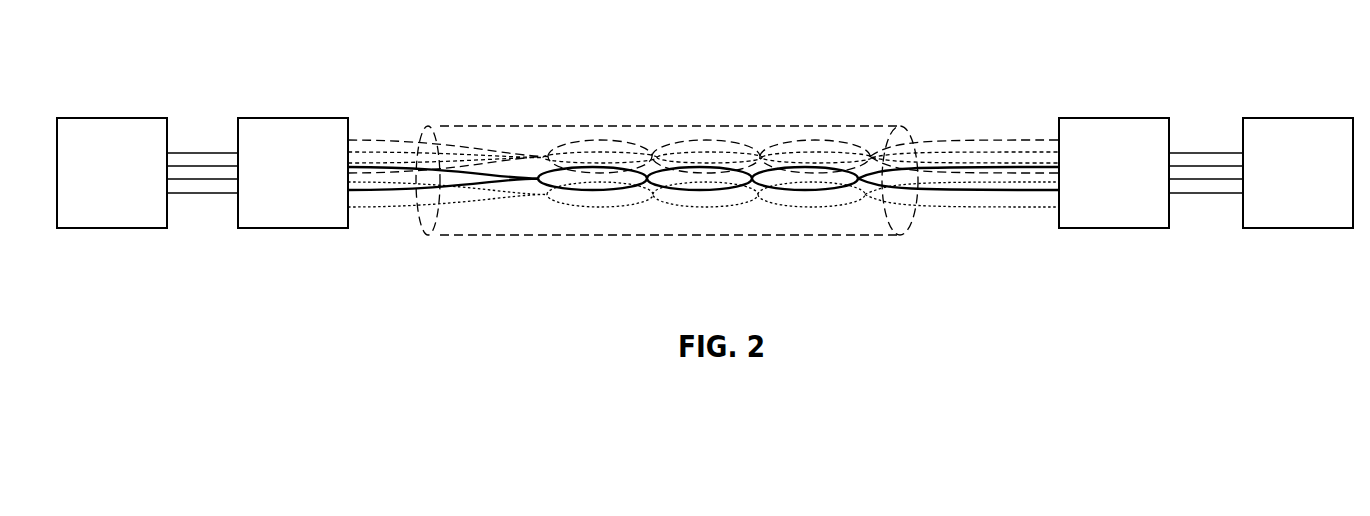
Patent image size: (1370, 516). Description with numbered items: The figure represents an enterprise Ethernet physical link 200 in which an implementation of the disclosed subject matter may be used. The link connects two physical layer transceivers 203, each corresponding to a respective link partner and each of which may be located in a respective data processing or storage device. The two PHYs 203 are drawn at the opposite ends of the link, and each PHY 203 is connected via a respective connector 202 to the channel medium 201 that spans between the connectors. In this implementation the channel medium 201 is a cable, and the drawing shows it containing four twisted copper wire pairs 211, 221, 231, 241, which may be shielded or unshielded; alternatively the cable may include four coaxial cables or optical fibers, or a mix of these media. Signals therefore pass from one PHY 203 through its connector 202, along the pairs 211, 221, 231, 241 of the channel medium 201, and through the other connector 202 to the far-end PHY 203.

The enterprise Ethernet physical link 200 is at (130, 36).
The channel medium 201 is at (766, 127).
The connector 202 is at (312, 117).
The physical layer transceiver 203 is at (131, 117).
The twisted copper wire pair 211 is at (941, 208).
The twisted copper wire pair 221 is at (1022, 191).
The twisted copper wire pair 231 is at (943, 153).
The twisted copper wire pair 241 is at (993, 141).